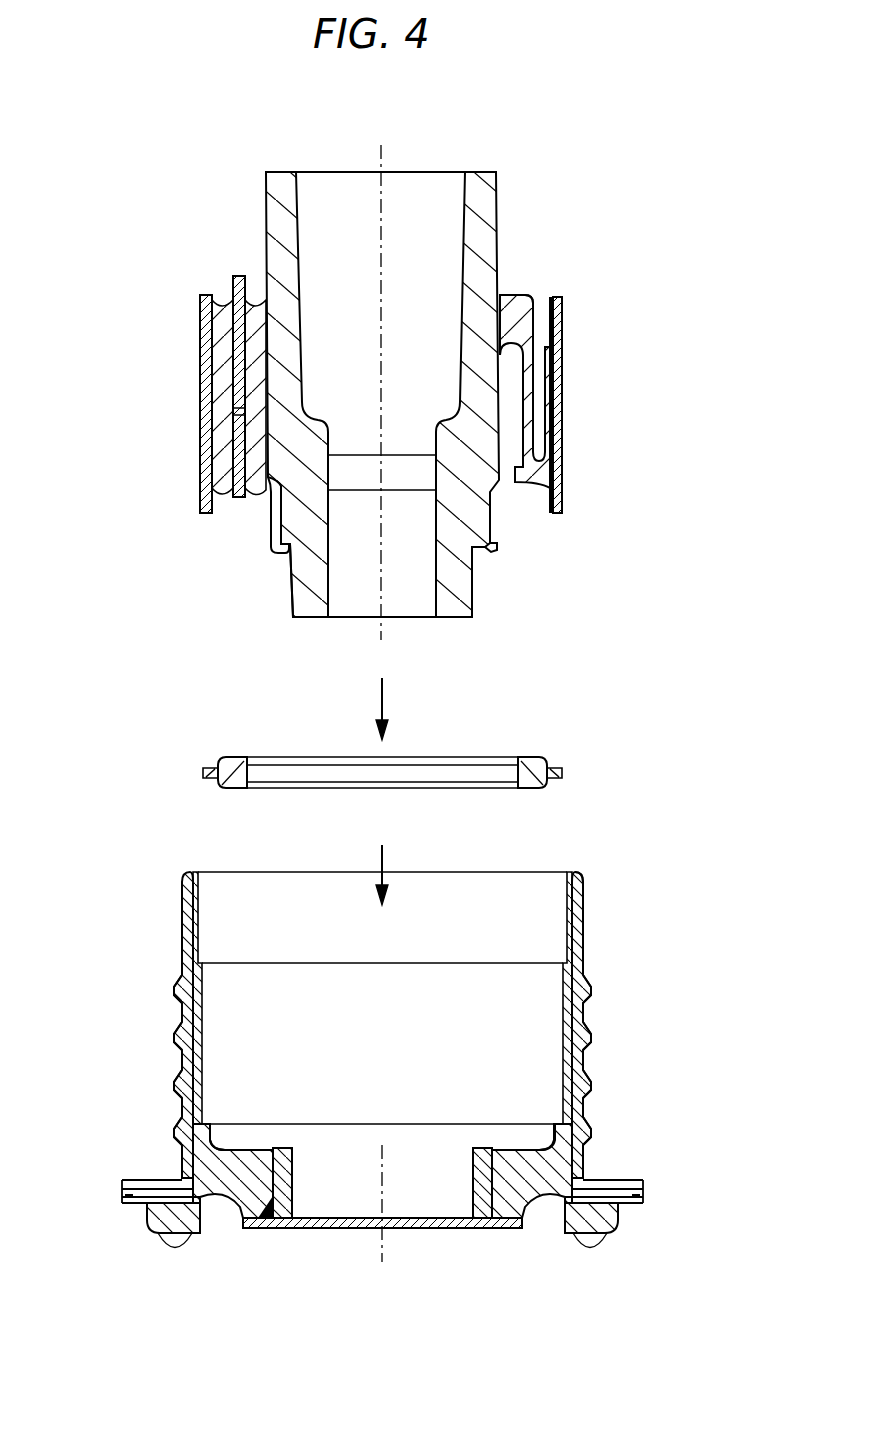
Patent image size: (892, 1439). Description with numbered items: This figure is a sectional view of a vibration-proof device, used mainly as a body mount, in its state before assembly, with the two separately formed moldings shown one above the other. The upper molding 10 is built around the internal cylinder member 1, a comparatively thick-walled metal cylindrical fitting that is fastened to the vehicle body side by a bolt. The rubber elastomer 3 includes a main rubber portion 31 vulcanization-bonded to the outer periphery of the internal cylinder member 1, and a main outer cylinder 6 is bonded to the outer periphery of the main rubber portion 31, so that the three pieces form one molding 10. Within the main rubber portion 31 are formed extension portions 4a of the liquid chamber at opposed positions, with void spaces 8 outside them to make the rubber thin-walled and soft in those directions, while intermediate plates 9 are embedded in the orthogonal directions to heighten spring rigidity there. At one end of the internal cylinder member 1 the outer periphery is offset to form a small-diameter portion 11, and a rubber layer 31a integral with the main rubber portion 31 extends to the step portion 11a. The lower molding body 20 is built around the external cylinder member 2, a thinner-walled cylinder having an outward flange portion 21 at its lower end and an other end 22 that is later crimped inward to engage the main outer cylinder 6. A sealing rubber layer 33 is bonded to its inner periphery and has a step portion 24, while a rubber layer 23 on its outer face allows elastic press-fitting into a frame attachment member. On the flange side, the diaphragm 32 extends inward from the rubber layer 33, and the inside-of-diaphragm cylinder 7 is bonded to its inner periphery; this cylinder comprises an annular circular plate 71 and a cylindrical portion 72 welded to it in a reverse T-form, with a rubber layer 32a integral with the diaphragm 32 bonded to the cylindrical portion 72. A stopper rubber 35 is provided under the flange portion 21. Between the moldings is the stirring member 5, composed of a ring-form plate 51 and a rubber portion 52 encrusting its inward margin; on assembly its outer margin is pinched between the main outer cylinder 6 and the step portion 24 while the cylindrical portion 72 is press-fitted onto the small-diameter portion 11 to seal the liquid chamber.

The internal cylinder member 1 is at (483, 176).
The molding 10 is at (556, 198).
The intermediate plate 9 is at (240, 278).
The rubber elastomer 3 is at (522, 293).
The main rubber portion 31 is at (222, 373).
The void space 8 is at (545, 363).
The main outer cylinder 6 is at (557, 390).
The extension portion 4a is at (515, 425).
The rubber layer 31a is at (272, 520).
The small-diameter portion 11 is at (290, 588).
The step portion 11a is at (478, 552).
The stirring member 5 is at (548, 740).
The ring-form plate 51 is at (205, 773).
The rubber portion 52 is at (218, 785).
The other end 22 is at (578, 870).
The molding body 20 is at (610, 900).
The external cylinder member 2 is at (585, 940).
The sealing rubber layer 33 is at (201, 980).
The rubber layer 23 is at (175, 1040).
The step portion 24 is at (592, 1102).
The rubber layer 32a is at (210, 1158).
The outward flange portion 21 is at (640, 1200).
The stopper rubber 35 is at (160, 1230).
The diaphragm 32 is at (233, 1200).
The annular circular plate 71 is at (278, 1222).
The cylindrical portion 72 is at (292, 1180).
The inside-of-diaphragm cylinder 7 is at (268, 1298).